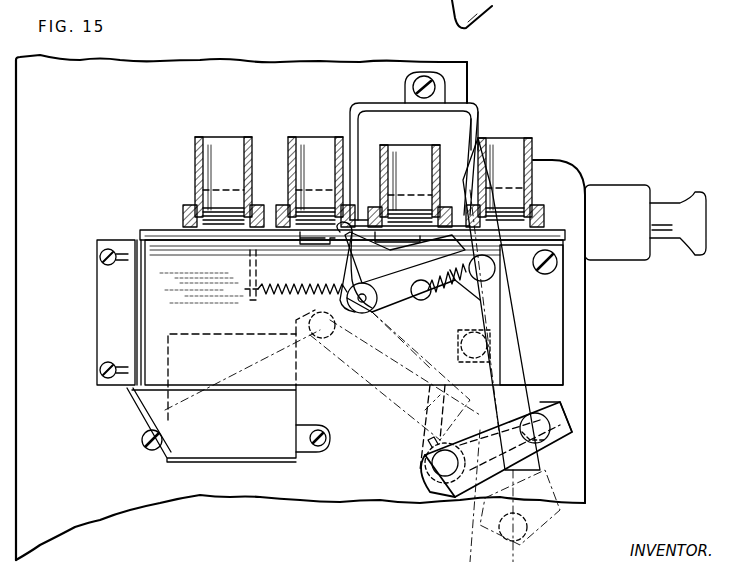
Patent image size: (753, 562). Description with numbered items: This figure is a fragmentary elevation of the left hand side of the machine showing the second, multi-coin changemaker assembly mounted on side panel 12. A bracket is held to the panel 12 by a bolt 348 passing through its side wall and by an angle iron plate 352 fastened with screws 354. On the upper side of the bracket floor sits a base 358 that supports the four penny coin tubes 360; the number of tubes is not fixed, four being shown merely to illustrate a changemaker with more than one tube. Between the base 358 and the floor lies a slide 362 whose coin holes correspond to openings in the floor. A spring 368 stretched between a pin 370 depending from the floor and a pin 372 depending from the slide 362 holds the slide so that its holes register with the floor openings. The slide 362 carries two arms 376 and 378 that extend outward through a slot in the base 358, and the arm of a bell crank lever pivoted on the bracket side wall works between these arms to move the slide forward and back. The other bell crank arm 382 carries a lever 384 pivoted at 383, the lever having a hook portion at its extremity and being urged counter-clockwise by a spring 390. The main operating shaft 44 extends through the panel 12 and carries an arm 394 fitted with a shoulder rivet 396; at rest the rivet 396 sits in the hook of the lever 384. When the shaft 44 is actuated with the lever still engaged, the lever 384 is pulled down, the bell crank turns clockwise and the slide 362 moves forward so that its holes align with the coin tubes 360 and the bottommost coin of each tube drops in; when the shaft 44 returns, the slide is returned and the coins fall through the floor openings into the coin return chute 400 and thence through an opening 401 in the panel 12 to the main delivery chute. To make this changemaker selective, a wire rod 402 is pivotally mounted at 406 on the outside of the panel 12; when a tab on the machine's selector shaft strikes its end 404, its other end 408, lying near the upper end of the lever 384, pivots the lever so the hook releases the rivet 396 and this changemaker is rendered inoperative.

The panel 12 is at (101, 155).
The main operating shaft 44 is at (432, 463).
The bolt 348 is at (557, 268).
The angle iron plate 352 is at (130, 292).
The screws 354 is at (100, 258).
The base 358 is at (185, 215).
The penny coin tubes 360 is at (290, 150).
The slide 362 is at (143, 234).
The spring 368 is at (285, 300).
The pin 370 is at (247, 262).
The pin 372 is at (405, 272).
The arm 376 is at (330, 245).
The arm 378 is at (345, 280).
The bell crank arm 382 is at (500, 300).
The pivot 383 is at (497, 278).
The lever 384 is at (472, 192).
The spring 390 is at (425, 266).
The arm 394 is at (556, 404).
The shoulder rivet 396 is at (550, 428).
The coin return chute 400 is at (182, 432).
The opening 401 is at (172, 367).
The wire rod 402 is at (358, 104).
The end of wire rod 404 is at (483, 117).
The pivot 406 is at (438, 89).
The end of wire rod 408 is at (375, 148).